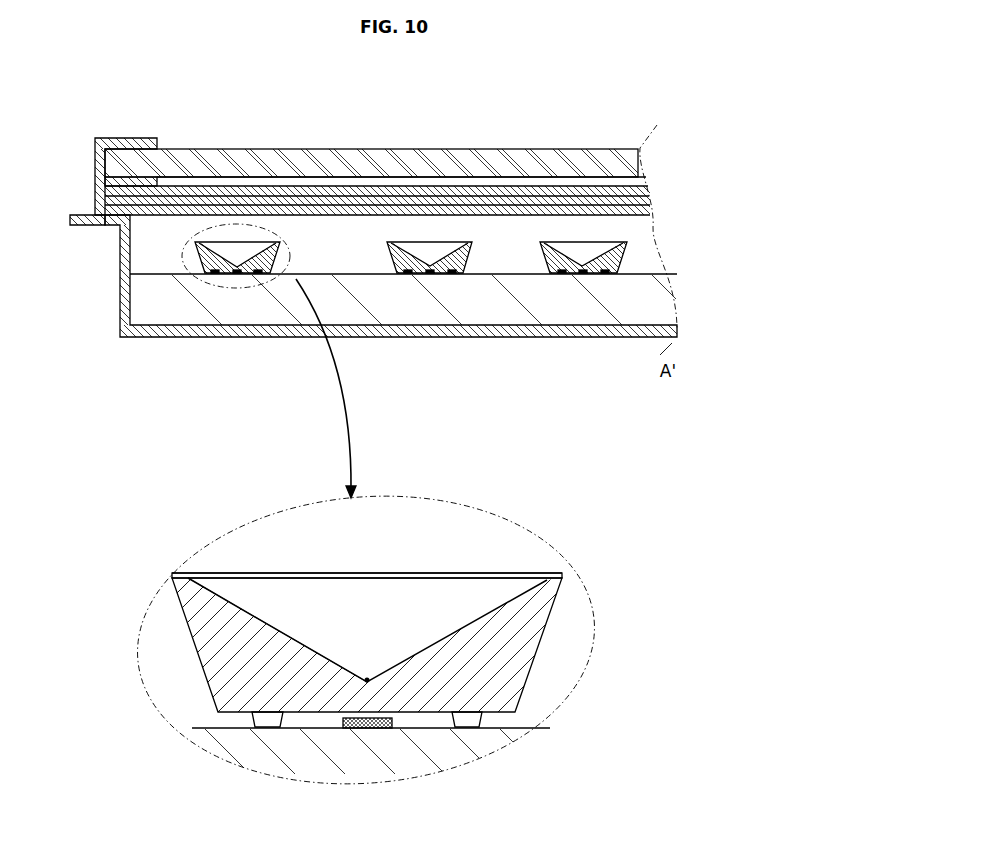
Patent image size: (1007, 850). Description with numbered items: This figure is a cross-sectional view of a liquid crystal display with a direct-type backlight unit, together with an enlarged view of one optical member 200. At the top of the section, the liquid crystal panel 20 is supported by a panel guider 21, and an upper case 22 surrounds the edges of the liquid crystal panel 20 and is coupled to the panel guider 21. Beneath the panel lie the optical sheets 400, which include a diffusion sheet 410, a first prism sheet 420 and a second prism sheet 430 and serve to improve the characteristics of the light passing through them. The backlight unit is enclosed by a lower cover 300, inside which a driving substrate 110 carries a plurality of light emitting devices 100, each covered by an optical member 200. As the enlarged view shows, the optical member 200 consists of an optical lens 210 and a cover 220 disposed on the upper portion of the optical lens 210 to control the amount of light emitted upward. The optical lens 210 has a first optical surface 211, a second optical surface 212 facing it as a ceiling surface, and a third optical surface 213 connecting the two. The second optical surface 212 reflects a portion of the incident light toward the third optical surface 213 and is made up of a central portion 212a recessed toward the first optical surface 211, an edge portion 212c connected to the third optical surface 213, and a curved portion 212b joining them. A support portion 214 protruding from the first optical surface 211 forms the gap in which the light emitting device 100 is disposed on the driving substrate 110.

The liquid crystal panel 20 is at (203, 162).
The panel guider 21 is at (95, 205).
The upper case 22 is at (95, 153).
The optical sheets 400 is at (377, 145).
The diffusion sheet 410 is at (263, 104).
The first prism sheet 420 is at (335, 193).
The second prism sheet 430 is at (287, 184).
The driving substrate 110 is at (397, 317).
The lower cover 300 is at (590, 337).
The optical member 200 is at (459, 630).
The optical lens 210 is at (459, 644).
The first optical surface 211 is at (488, 652).
The second optical surface 212 is at (434, 622).
The central portion 212a is at (440, 630).
The curved portion 212b is at (511, 589).
The edge portion 212c is at (565, 574).
The third optical surface 213 is at (375, 678).
The support portion 214 is at (480, 721).
The cover 220 is at (307, 572).
The light emitting device 100 is at (353, 732).